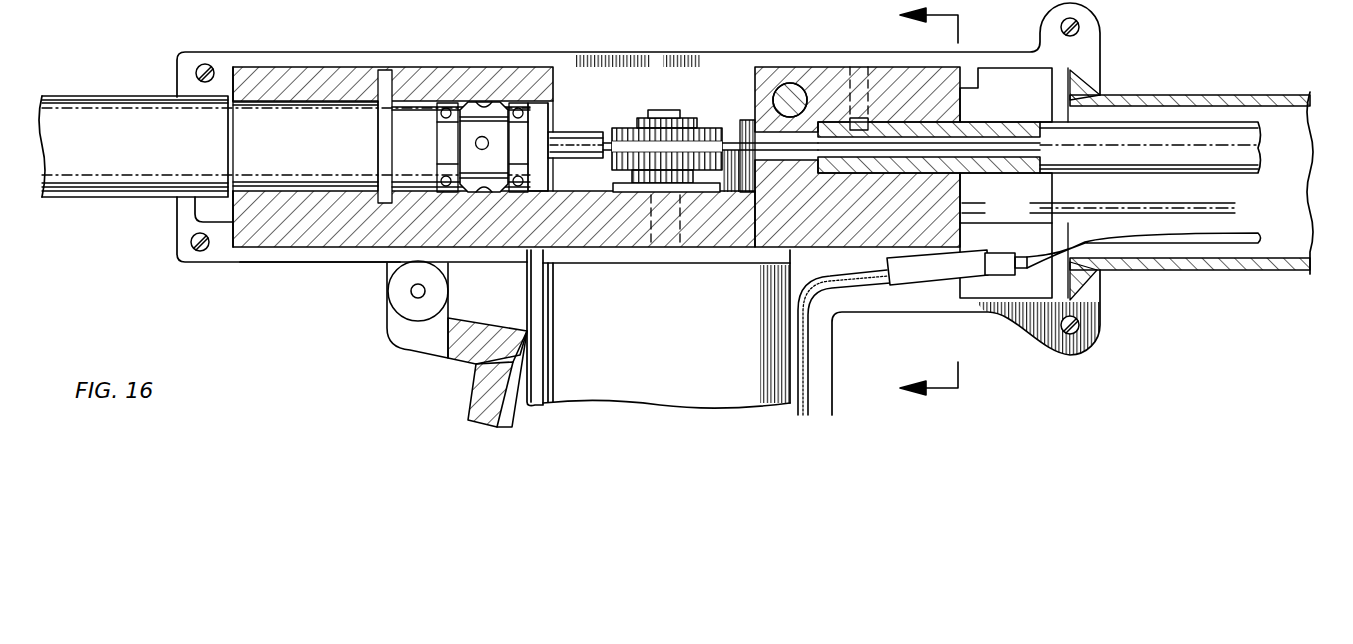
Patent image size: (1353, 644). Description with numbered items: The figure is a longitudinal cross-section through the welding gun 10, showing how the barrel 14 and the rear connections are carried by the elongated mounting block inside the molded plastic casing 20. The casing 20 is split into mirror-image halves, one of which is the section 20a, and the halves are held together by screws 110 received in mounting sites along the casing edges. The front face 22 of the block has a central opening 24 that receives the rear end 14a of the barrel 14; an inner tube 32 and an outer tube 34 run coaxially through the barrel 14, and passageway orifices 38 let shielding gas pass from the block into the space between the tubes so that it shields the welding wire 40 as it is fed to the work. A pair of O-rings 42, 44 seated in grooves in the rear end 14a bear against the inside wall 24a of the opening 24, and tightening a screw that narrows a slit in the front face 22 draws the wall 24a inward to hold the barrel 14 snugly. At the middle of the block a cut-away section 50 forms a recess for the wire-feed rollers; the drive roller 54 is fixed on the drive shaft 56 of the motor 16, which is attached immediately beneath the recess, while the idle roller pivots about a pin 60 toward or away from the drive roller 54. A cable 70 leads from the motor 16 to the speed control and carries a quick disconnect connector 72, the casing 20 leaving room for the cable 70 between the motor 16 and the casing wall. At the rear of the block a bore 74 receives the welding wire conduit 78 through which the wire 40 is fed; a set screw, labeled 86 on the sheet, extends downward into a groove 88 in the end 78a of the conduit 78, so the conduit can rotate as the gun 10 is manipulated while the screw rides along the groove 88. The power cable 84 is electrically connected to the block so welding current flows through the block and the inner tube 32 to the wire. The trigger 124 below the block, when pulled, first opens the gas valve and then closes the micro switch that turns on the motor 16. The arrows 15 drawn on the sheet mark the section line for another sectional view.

The welding gun 10 is at (392, 376).
The barrel 14 is at (78, 96).
The rear end of the barrel 14a is at (540, 104).
The section line 15- 15 is at (951, 201).
The motor 16 is at (642, 372).
The casing 20 is at (172, 221).
The casing section 20a is at (296, 263).
The front face 22 is at (223, 88).
The central opening 24 is at (247, 104).
The inside wall of the opening 24a is at (410, 182).
The inner tube 32 is at (580, 130).
The outer tube 34 is at (314, 140).
The passageway orifices 38 is at (473, 145).
The welding wire 40 is at (640, 148).
The O-ring 42 is at (444, 104).
The O-ring 44 is at (517, 104).
The cut away section 50 is at (750, 92).
The drive roller 54 is at (660, 110).
The drive shaft 56 is at (690, 247).
The pin 60 is at (792, 85).
The cable 70 is at (800, 378).
The quick disconnect connector 72 is at (947, 275).
The bore 74 is at (963, 117).
The welding wire conduit 78 is at (1225, 128).
The end of the welding conduit 78a is at (893, 168).
The power cable 84 is at (1218, 204).
The set screw bore 86 is at (866, 86).
The groove 88 is at (855, 175).
The screws 110 is at (196, 72).
The trigger 124 is at (473, 393).